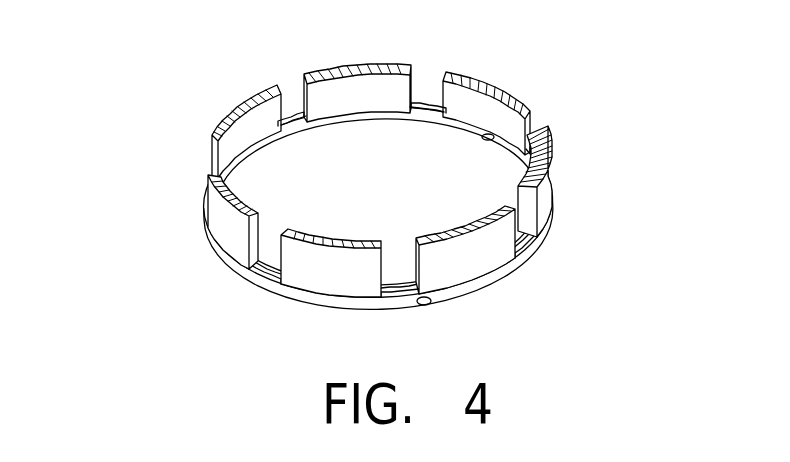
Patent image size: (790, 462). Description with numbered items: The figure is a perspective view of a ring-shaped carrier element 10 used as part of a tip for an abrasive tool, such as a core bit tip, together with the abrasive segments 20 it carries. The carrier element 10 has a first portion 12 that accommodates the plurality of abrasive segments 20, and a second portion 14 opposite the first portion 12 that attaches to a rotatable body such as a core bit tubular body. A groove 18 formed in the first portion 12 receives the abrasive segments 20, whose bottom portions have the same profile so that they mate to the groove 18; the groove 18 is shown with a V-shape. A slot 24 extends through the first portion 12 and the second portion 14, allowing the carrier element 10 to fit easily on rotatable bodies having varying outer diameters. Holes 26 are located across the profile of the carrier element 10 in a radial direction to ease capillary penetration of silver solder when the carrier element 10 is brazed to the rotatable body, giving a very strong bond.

The carrier element 10 is at (58, 78).
The first portion 12 is at (290, 105).
The second portion 14 is at (533, 263).
The groove 18 is at (423, 102).
The abrasive segments 20 is at (500, 90).
The slot 24 is at (259, 268).
The holes 26 is at (429, 304).